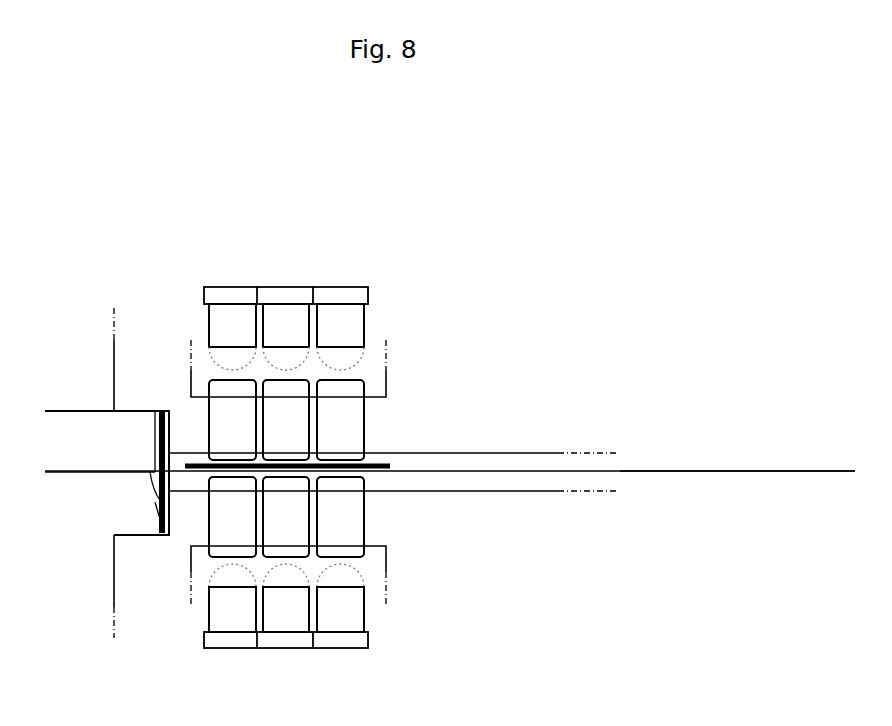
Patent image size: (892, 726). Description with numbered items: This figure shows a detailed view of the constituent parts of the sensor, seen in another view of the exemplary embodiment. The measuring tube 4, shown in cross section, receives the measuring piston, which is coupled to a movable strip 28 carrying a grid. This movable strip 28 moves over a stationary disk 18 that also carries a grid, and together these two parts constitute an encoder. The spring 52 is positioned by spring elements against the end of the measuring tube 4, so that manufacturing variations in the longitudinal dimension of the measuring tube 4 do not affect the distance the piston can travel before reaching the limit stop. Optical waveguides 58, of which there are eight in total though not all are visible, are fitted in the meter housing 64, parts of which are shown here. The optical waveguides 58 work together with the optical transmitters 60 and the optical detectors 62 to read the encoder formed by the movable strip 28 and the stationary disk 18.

The measuring tube 4 is at (93, 406).
The stationary disk 18 is at (392, 467).
The movable strip 28 is at (698, 474).
The spring 52 is at (150, 507).
The optical waveguides 58 is at (359, 417).
The optical transmitters 60 is at (209, 604).
The optical detectors 62 is at (372, 296).
The meter housing 64 is at (112, 565).